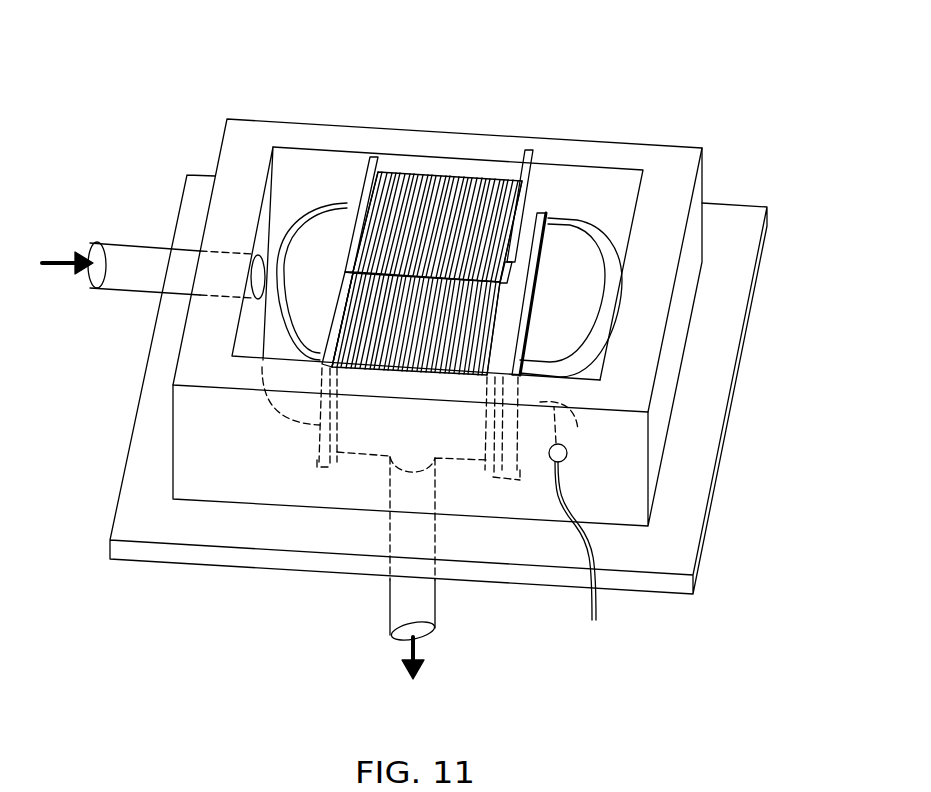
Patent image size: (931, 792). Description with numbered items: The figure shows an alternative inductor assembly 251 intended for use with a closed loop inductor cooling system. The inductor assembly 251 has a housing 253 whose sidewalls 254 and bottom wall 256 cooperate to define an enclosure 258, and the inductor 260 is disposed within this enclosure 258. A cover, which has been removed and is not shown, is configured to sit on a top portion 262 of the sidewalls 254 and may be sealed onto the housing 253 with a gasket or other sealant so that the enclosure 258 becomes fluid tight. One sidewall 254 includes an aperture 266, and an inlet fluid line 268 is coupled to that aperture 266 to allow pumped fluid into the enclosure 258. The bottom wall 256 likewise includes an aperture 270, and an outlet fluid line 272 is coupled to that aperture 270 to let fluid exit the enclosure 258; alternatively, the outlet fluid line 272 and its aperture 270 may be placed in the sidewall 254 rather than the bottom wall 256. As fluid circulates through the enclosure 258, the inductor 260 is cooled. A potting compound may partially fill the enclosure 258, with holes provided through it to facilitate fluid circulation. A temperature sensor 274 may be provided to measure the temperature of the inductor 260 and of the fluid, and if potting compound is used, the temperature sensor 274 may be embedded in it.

The inductor assembly 251 is at (130, 140).
The housing 253 is at (258, 137).
The sidewalls 254 is at (593, 150).
The bottom wall 256 is at (732, 227).
The enclosure 258 is at (620, 186).
The inductor 260 is at (506, 170).
The top portion of the sidewalls 262 is at (232, 160).
The aperture 266 is at (262, 292).
The inlet fluid line 268 is at (133, 283).
The aperture 270 is at (390, 467).
The outlet fluid line 272 is at (437, 603).
The temperature sensor 274 is at (568, 455).